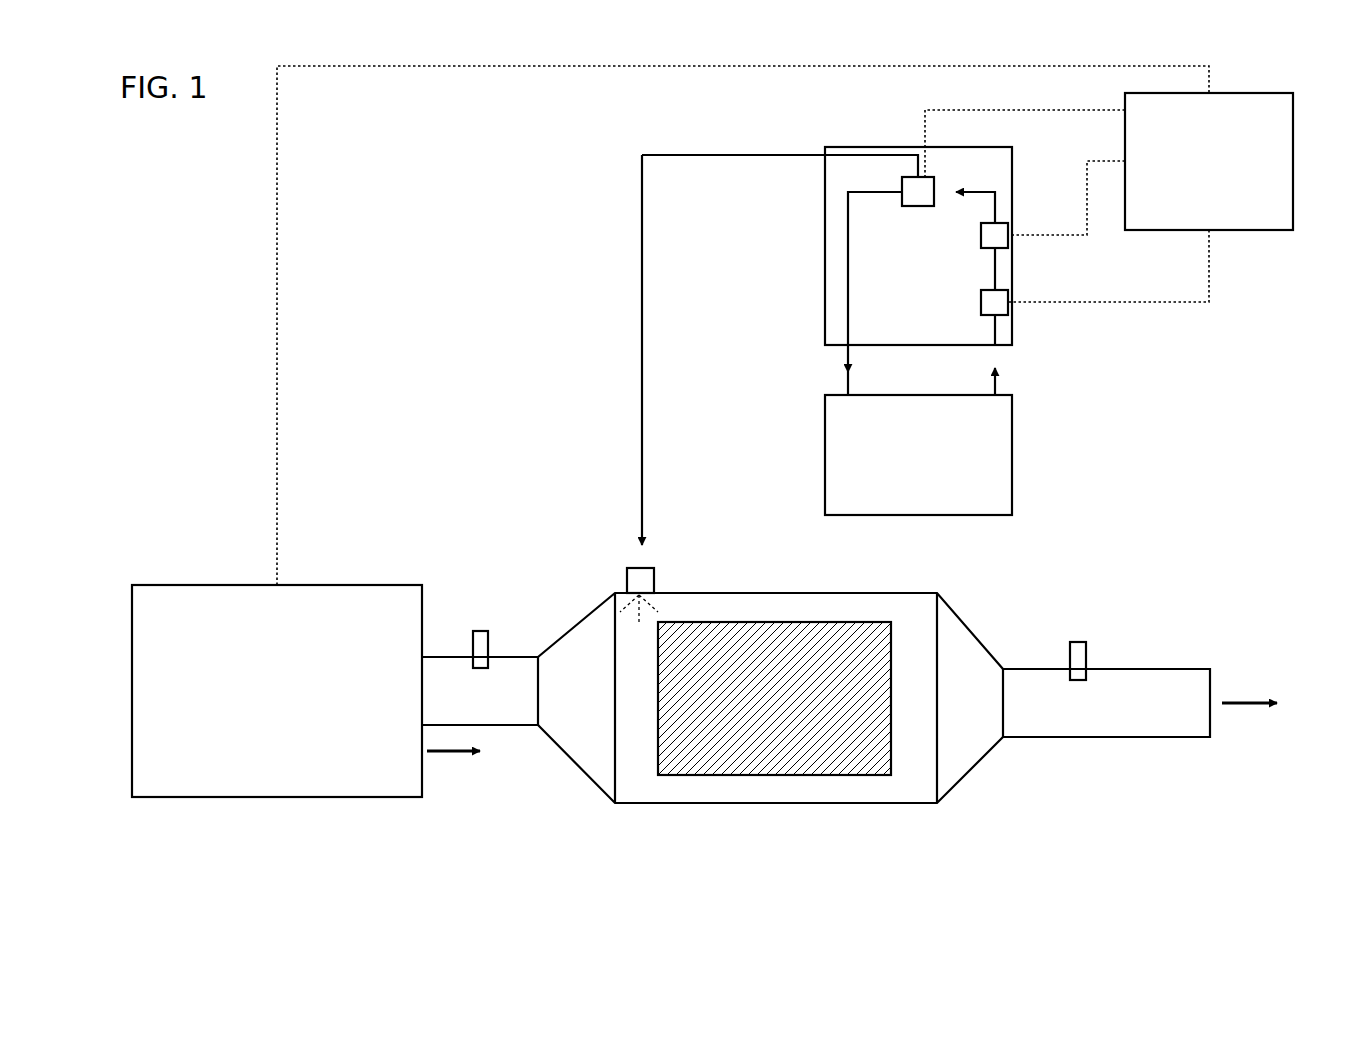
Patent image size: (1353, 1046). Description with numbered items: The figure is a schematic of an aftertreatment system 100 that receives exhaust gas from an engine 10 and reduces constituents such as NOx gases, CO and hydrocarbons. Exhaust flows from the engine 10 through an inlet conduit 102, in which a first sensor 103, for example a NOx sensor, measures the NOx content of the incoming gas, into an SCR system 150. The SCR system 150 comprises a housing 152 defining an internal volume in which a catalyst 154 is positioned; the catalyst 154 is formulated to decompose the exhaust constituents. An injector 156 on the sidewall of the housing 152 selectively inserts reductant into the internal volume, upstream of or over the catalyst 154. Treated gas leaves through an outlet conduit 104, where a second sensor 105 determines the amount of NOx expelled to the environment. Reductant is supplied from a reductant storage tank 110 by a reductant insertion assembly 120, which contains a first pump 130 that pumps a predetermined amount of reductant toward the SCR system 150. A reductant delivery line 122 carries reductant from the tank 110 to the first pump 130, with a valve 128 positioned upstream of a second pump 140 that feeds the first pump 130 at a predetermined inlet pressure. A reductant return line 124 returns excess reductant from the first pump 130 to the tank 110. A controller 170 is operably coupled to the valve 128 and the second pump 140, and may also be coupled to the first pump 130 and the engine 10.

The engine 10 is at (268, 715).
The aftertreatment system 100 is at (228, 192).
The inlet conduit 102 is at (525, 712).
The first sensor 103 is at (486, 648).
The outlet conduit 104 is at (1175, 730).
The second sensor 105 is at (1083, 660).
The reductant storage tank 110 is at (901, 492).
The reductant insertion assembly 120 is at (850, 140).
The reductant delivery line 122 is at (997, 337).
The reductant return line 124 is at (848, 290).
The valve 128 is at (993, 302).
The first pump 130 is at (913, 198).
The second pump 140 is at (993, 233).
The SCR system 150 is at (785, 756).
The housing 152 is at (825, 805).
The catalyst 154 is at (857, 753).
The injector 156 is at (640, 580).
The controller 170 is at (1192, 185).